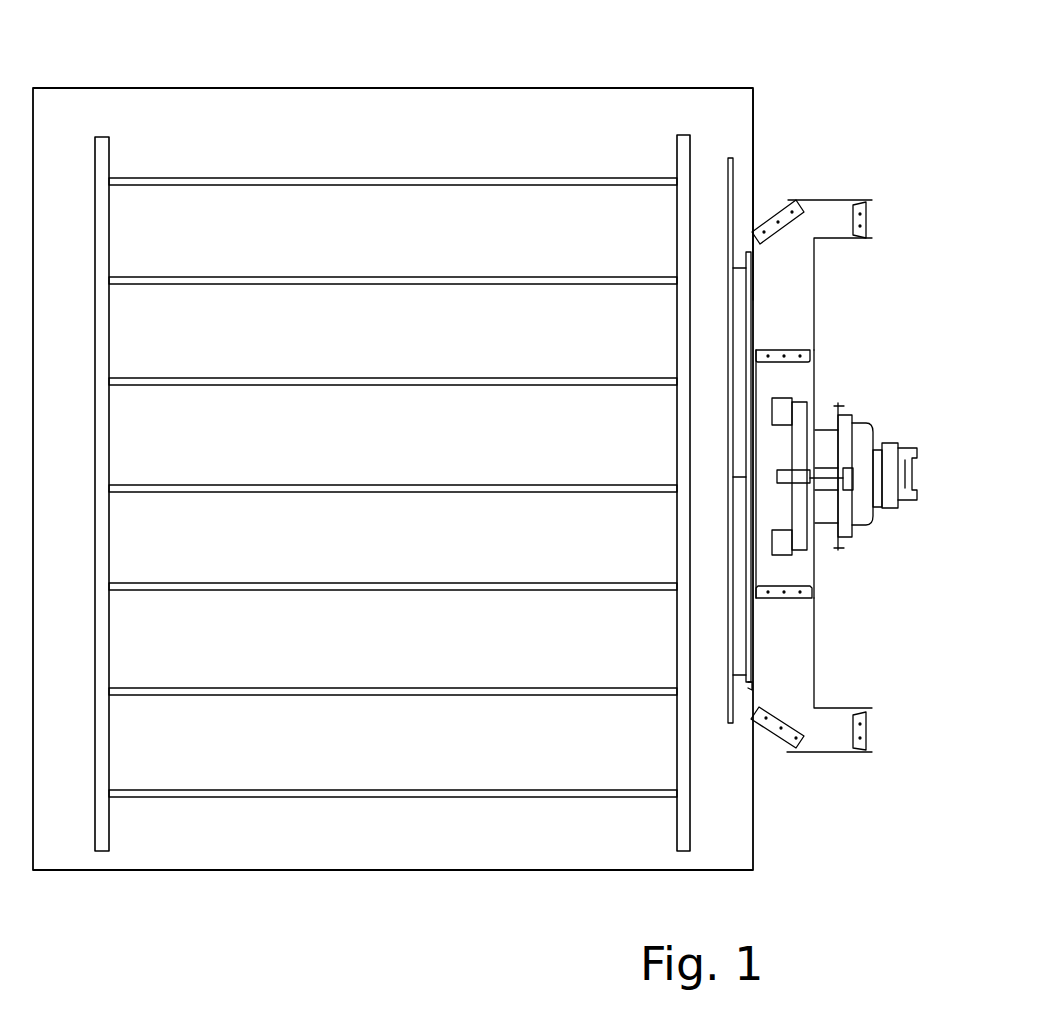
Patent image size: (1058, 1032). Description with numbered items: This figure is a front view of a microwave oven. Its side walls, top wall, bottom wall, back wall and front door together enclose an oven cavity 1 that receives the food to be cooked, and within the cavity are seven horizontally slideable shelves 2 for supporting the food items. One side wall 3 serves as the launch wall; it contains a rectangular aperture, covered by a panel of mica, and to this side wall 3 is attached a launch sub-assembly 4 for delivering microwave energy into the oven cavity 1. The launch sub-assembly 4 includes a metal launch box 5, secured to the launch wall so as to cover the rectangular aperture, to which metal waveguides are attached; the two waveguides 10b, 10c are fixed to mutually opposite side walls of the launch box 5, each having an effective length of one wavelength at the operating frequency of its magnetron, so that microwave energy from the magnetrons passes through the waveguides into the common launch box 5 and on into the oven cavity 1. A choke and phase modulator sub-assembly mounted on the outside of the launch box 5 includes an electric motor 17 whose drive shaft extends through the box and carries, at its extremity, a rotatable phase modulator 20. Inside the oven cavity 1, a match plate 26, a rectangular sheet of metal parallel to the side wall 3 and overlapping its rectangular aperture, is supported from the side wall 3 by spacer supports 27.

The oven cavity 1 is at (753, 88).
The horizontally slideable shelves 2 is at (343, 277).
The side wall 3 is at (753, 135).
The launch sub-assembly 4 is at (860, 271).
The metal launch box 5 is at (815, 385).
The metal waveguide 10b is at (815, 645).
The metal waveguide 10c is at (814, 322).
The electric motor 17 is at (883, 507).
The rotatable phase modulator 20 is at (803, 544).
The match plate 26 is at (732, 177).
The spacer supports 27 is at (735, 263).